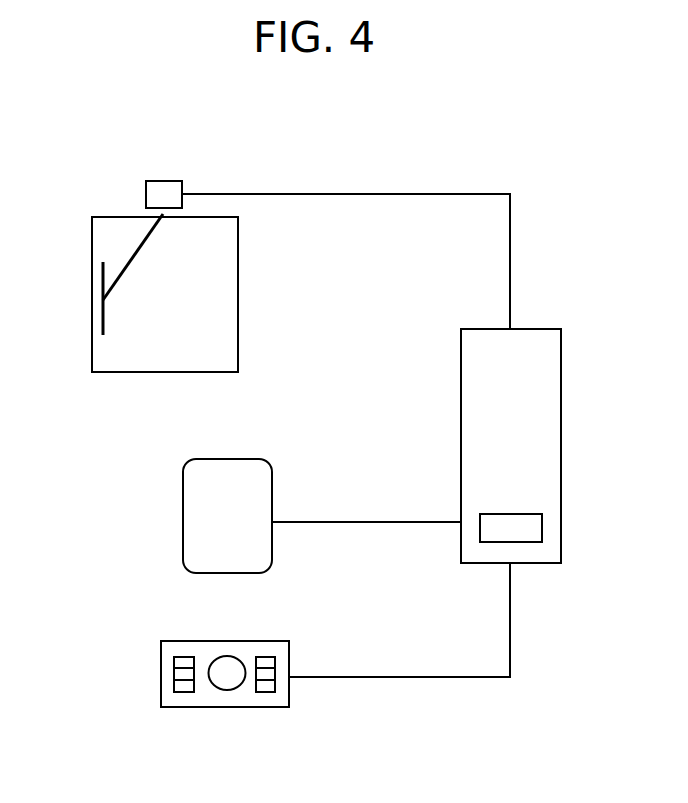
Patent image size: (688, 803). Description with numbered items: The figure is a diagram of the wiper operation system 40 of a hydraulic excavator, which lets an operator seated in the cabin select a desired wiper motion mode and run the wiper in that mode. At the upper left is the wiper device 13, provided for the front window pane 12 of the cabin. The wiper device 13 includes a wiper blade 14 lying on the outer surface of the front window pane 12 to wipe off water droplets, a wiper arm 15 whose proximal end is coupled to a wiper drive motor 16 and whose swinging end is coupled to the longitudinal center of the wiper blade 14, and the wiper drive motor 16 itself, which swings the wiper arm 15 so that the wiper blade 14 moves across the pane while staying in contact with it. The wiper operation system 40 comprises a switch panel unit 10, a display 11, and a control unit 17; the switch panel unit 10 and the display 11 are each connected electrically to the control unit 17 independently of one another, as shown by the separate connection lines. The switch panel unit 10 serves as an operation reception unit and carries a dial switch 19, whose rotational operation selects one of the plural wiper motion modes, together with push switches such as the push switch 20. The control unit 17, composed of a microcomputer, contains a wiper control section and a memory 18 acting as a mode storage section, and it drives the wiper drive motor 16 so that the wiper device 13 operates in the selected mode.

The switch panel unit 10 is at (201, 665).
The display 11 is at (253, 459).
The front window pane 12 is at (91, 363).
The wiper device 13 is at (119, 256).
The wiper blade 14 is at (102, 320).
The wiper arm 15 is at (132, 253).
The wiper drive motor 16 is at (163, 181).
The control unit 17 is at (495, 446).
The memory 18 is at (525, 514).
The dial switch 19 is at (228, 678).
The push switch 20 is at (174, 662).
The wiper operation system 40 is at (546, 602).